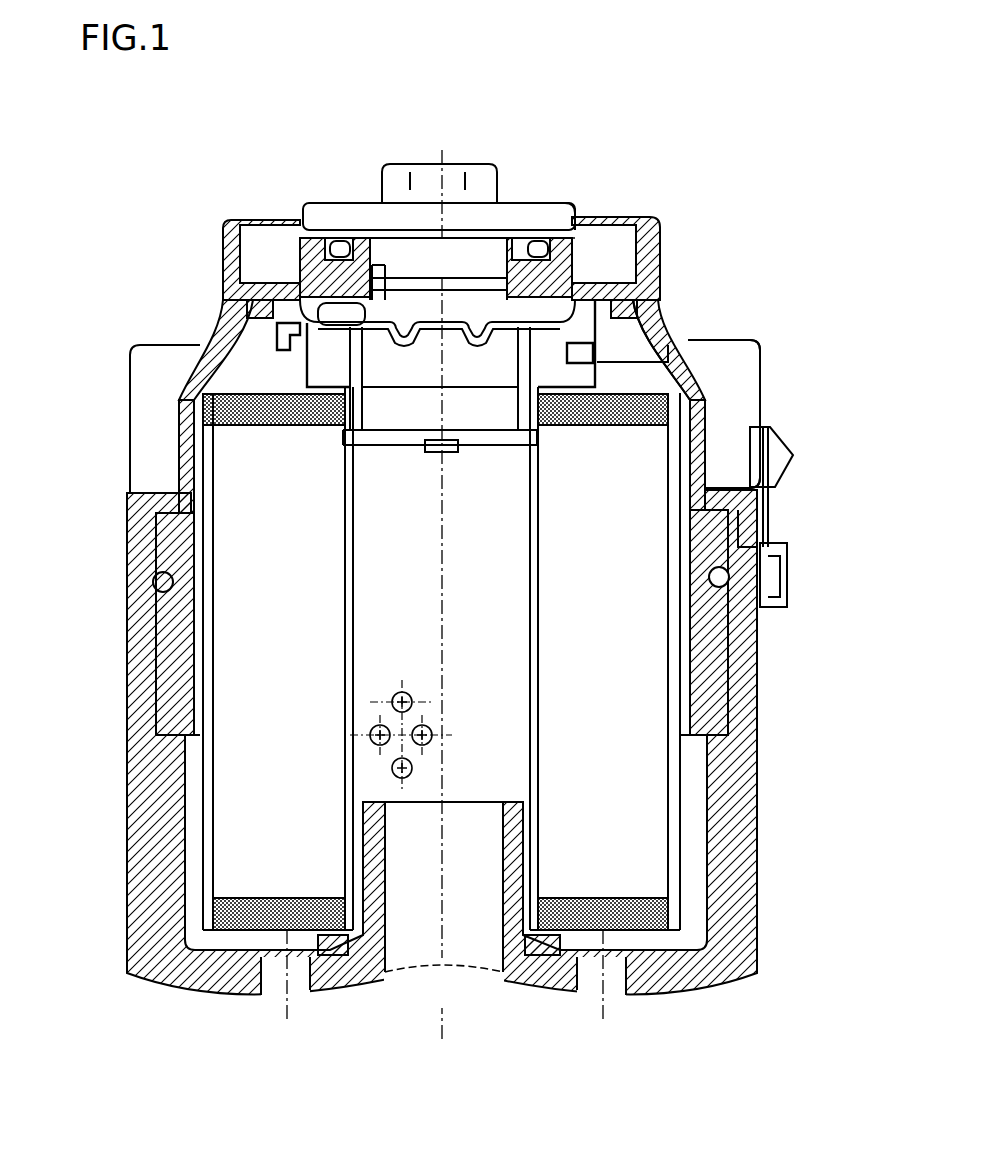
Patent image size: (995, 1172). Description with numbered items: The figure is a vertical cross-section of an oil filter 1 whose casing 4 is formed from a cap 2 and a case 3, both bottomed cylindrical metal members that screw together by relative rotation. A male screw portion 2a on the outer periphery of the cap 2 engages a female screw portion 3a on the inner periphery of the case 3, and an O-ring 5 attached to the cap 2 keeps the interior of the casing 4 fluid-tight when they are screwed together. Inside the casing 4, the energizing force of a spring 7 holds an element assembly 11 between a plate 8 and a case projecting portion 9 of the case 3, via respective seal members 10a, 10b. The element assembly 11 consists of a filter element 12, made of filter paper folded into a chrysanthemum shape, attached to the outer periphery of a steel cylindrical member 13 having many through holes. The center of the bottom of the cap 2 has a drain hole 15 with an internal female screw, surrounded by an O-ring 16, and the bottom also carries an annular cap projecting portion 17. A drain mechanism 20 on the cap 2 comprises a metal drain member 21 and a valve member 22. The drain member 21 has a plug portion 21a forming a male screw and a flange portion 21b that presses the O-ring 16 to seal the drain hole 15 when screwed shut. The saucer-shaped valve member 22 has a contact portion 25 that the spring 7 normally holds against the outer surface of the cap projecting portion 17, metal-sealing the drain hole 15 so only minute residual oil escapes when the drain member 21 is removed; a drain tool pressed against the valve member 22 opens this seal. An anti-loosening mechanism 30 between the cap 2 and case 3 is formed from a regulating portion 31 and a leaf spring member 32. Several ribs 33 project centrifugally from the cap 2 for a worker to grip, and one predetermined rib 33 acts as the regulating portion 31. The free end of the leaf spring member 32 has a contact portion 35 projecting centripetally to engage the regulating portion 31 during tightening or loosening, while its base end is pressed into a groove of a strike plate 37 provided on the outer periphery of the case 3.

The oil filter 1 is at (747, 218).
The cap 2 is at (660, 286).
The male screw portion 2a is at (720, 665).
The case 3 is at (760, 853).
The female screw portion 3a is at (150, 660).
The casing 4 is at (757, 739).
The O-ring 5 is at (150, 576).
The spring 7 is at (585, 322).
The plate 8 is at (675, 380).
The case projecting portion 9 is at (558, 955).
The seal member 10a is at (325, 955).
The seal member 10b is at (330, 385).
The element assembly 11 is at (208, 801).
The filter element 12 is at (237, 867).
The cylindrical member 13 is at (367, 663).
The drain hole 15 is at (390, 263).
The O-ring 16 is at (340, 242).
The cap projecting portion 17 is at (426, 278).
The drain mechanism 20 is at (476, 156).
The drain member 21 is at (520, 134).
The plug portion 21a is at (478, 262).
The flange portion 21b is at (558, 212).
The valve member 22 is at (322, 318).
The contact portion 25 is at (370, 335).
The anti-loosening mechanism 30 is at (792, 489).
The regulating portion 31 is at (775, 414).
The leaf spring member 32 is at (770, 521).
The ribs 33 is at (147, 403).
The contact portion 35 is at (752, 438).
The strike plate 37 is at (778, 578).